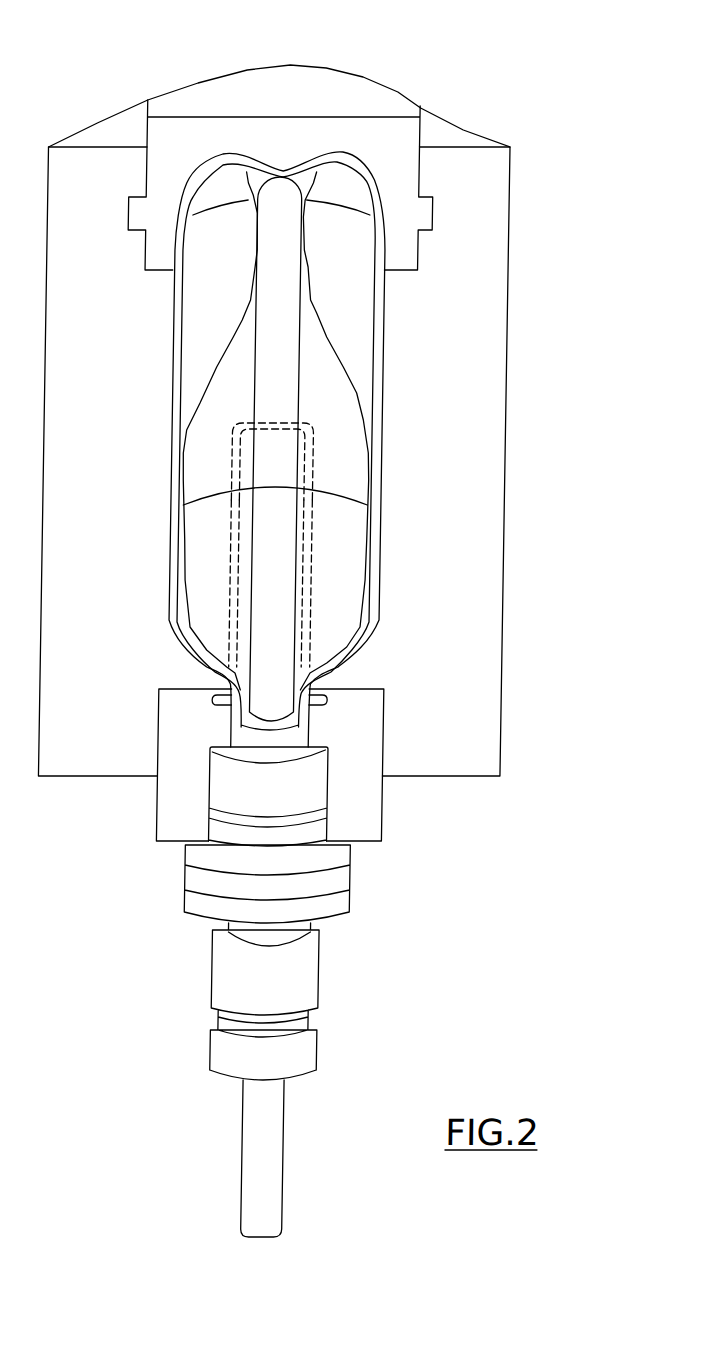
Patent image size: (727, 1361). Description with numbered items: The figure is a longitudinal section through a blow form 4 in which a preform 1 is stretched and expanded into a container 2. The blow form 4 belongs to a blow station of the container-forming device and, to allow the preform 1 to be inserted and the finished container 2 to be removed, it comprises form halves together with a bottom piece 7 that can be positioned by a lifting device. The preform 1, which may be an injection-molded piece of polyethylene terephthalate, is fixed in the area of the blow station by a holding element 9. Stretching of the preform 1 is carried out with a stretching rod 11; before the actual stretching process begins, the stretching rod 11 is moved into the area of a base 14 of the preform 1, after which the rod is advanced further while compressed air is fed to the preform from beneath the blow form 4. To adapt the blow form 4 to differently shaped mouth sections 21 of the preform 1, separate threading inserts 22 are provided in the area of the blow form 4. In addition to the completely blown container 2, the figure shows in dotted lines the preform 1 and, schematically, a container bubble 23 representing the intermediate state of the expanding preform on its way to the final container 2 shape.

The preform 1 is at (312, 578).
The container 2 is at (386, 365).
The blow form 4 is at (465, 433).
The bottom piece 7 is at (355, 83).
The holding element 9 is at (339, 905).
The stretching rod 11 is at (251, 1170).
The base 14 is at (313, 425).
The mouth section 21 is at (312, 713).
The threading inserts 22 is at (388, 800).
The container bubble 23 is at (383, 316).